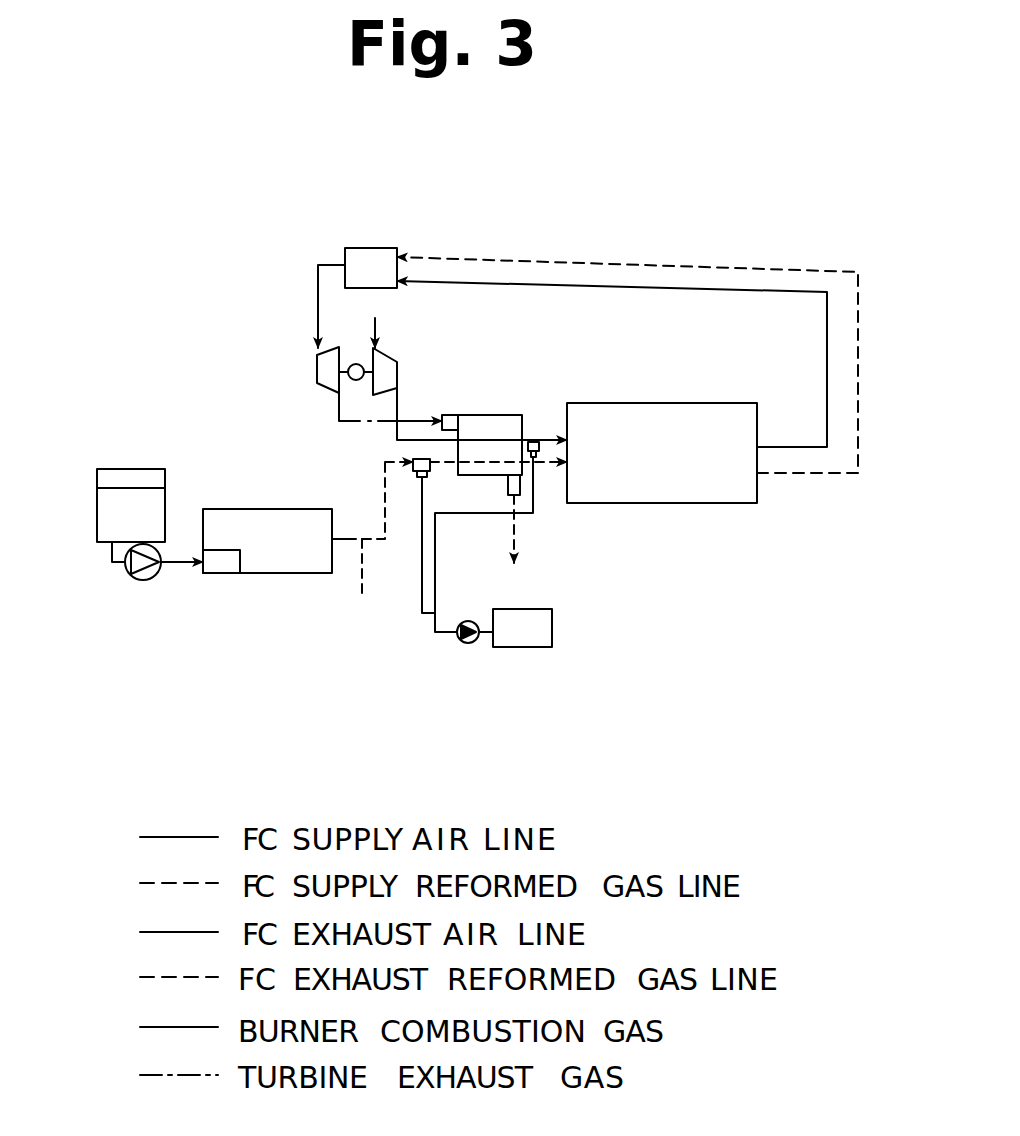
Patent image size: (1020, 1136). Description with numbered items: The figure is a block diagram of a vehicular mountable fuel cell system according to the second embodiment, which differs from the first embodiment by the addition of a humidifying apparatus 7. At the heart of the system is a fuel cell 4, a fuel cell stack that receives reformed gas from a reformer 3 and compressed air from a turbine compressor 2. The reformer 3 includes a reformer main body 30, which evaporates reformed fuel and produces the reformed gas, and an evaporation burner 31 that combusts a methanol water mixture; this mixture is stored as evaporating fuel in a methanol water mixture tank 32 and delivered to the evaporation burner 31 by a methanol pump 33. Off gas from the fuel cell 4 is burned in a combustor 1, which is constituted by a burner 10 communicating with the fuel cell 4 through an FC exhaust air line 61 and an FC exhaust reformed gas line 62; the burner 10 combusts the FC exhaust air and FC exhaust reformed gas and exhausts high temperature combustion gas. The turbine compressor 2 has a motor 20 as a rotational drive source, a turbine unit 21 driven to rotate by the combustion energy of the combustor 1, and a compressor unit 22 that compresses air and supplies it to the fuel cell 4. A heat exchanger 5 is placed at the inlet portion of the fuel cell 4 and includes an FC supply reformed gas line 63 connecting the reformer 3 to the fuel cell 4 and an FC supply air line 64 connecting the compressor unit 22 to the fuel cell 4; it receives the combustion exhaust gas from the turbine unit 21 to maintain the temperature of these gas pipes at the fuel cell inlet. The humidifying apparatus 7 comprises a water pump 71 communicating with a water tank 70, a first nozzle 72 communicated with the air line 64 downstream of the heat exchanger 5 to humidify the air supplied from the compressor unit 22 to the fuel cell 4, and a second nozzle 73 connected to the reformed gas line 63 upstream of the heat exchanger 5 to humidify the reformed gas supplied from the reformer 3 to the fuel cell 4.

The combustor 1 is at (373, 219).
The burner 10 is at (363, 258).
The turbine compressor 2 is at (335, 331).
The motor 20 is at (349, 346).
The turbine unit 21 is at (302, 365).
The compressor unit 22 is at (407, 362).
The reformer 3 is at (253, 550).
The reformer main body 30 is at (223, 515).
The evaporation burner 31 is at (222, 563).
The methanol water mixture tank 32 is at (96, 470).
The methanol pump 33 is at (147, 580).
The fuel cell 4 is at (665, 403).
The heat exchanger 5 is at (485, 396).
The FC exhaust air line 61 is at (827, 340).
The FC exhaust reformed gas line 62 is at (858, 349).
The FC supply reformed gas line 63 is at (363, 588).
The FC supply air line 64 is at (383, 423).
The humidifying apparatus 7 is at (521, 605).
The water tank 70 is at (530, 615).
The water pump 71 is at (469, 620).
The first nozzle 72 is at (534, 416).
The second nozzle 73 is at (405, 467).